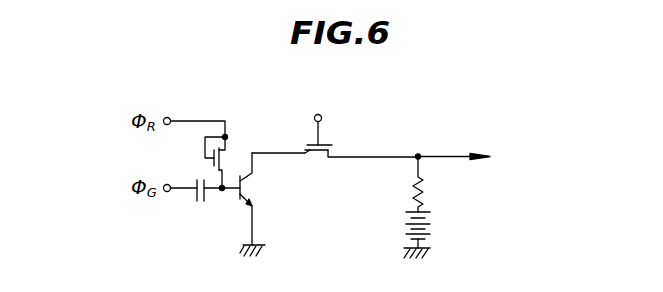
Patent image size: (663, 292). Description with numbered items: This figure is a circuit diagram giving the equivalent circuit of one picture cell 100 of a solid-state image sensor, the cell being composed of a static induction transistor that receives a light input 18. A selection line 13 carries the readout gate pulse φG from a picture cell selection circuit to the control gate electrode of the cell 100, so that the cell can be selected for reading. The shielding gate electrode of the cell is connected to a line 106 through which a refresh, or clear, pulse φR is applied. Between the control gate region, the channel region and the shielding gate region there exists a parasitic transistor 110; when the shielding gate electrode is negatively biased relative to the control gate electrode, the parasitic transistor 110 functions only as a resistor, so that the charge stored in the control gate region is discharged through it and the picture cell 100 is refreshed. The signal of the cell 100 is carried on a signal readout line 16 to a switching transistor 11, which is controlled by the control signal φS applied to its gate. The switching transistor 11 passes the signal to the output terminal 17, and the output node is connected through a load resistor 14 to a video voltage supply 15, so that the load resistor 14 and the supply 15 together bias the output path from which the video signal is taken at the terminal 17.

The line 106 is at (224, 132).
The parasitic transistor 110 is at (226, 151).
The selection line 13 is at (184, 188).
The light input 18 is at (203, 174).
The picture cell 100 is at (222, 201).
The signal readout line 16 is at (285, 150).
The switching transistor 11 is at (324, 133).
The output terminal 17 is at (467, 159).
The load resistor 14 is at (430, 192).
The video voltage supply 15 is at (430, 226).